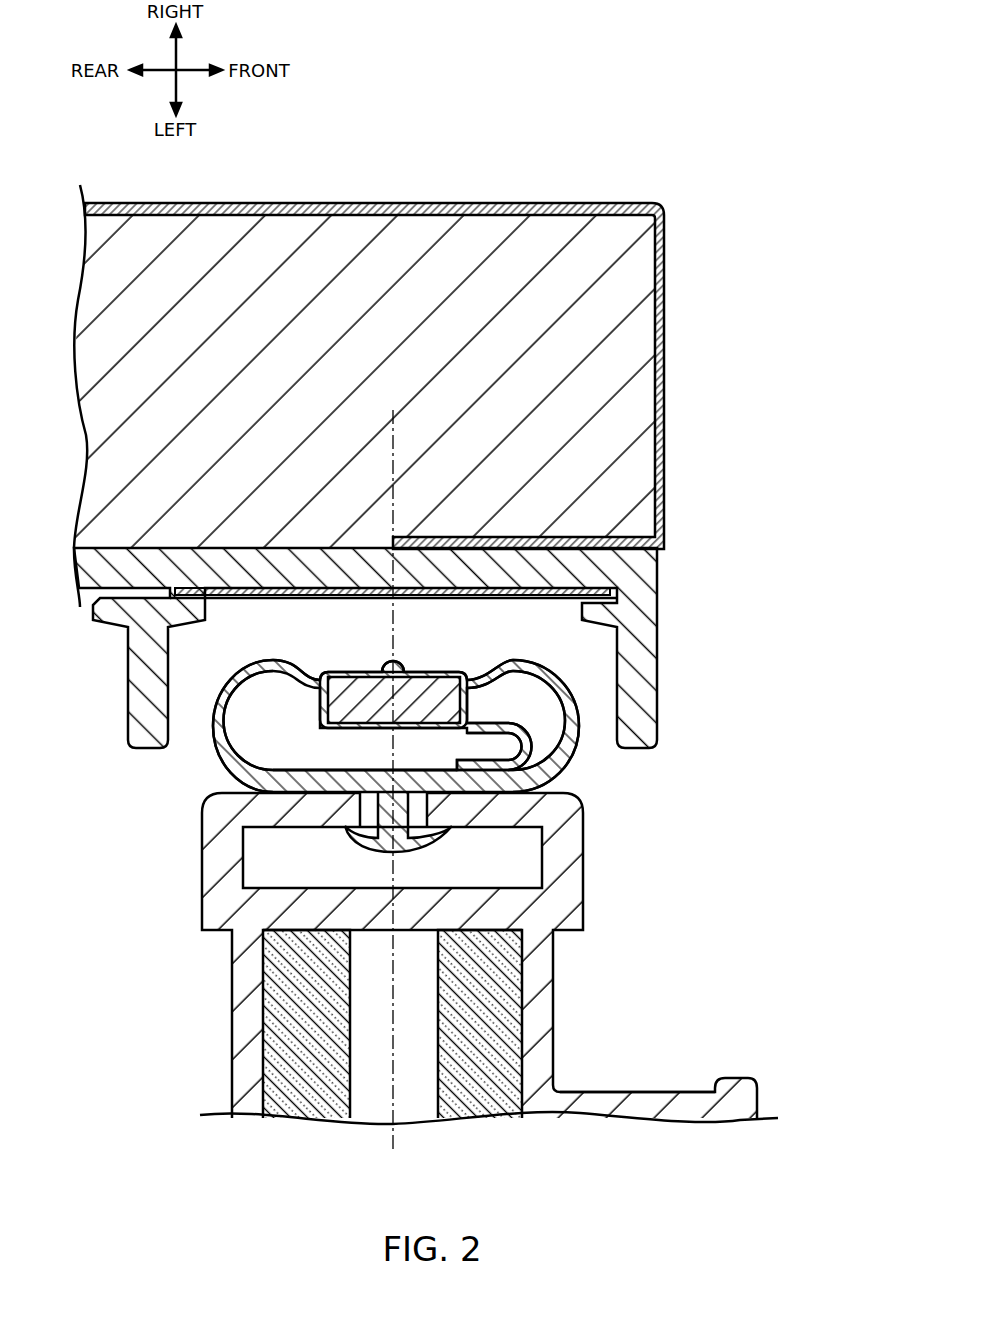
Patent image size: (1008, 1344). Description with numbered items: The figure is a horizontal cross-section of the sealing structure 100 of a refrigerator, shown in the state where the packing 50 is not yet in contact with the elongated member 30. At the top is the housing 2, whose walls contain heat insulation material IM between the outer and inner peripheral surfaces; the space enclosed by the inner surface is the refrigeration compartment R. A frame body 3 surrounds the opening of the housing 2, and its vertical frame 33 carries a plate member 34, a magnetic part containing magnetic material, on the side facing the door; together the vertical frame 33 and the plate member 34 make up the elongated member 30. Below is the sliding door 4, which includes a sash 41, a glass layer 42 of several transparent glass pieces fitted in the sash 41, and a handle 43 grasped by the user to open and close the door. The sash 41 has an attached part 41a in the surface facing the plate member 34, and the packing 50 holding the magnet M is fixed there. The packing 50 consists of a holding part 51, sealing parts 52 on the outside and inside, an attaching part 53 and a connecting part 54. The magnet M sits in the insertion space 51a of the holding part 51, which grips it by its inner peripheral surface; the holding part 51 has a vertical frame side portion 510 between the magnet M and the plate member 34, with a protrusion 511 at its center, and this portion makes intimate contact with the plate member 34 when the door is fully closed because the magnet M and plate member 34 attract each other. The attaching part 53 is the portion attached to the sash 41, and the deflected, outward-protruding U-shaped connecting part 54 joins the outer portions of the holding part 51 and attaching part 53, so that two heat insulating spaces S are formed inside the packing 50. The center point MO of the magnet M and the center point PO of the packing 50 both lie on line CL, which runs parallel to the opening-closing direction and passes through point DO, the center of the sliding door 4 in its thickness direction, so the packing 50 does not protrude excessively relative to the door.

The sealing structure 100 is at (740, 222).
The housing 2 is at (697, 327).
The heat insulation material IM is at (640, 462).
The frame body 3 is at (808, 522).
The elongated member 30 is at (783, 558).
The vertical frame 33 is at (657, 637).
The plate member 34 is at (607, 584).
The packing 50 is at (208, 777).
The sealing part 52 is at (243, 662).
The vertical frame side portion 510 is at (336, 674).
The protrusion 511 is at (455, 664).
The holding part 51 is at (320, 702).
The insertion space 51a is at (478, 720).
The magnet M is at (343, 712).
The point MO is at (393, 700).
The heat insulating space S is at (296, 759).
The point PO is at (393, 785).
The connecting part 54 is at (545, 740).
The attaching part 53 is at (430, 848).
The sliding door 4 is at (735, 1040).
The sash 41 is at (595, 925).
The attached part 41a is at (490, 843).
The line CL is at (393, 858).
The refrigeration compartment R is at (92, 989).
The glass layer 42 is at (263, 1013).
The handle 43 is at (636, 1102).
The point DO is at (393, 1102).